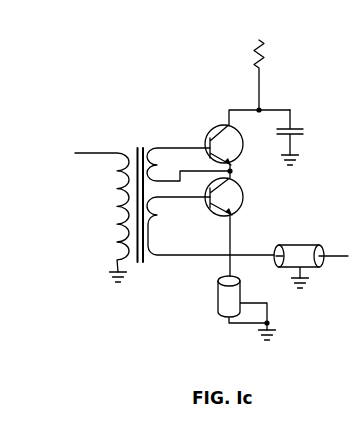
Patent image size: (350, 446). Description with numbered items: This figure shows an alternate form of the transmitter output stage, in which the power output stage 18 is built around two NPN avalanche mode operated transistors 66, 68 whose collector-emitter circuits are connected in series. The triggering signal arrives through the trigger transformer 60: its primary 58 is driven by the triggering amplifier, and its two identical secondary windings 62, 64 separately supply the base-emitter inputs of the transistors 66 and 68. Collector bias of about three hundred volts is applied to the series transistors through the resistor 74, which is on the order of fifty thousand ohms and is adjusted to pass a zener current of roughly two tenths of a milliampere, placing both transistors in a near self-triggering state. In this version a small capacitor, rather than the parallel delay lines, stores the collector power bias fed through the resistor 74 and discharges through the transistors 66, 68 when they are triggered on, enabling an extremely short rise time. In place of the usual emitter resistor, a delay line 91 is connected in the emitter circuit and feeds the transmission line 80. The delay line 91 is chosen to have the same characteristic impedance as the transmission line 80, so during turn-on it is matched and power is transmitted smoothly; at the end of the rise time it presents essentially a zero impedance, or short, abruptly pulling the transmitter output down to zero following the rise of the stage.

The power output stage 18 is at (174, 192).
The primary 58 is at (118, 204).
The trigger transformer 60 is at (133, 152).
The secondary winding 62 is at (157, 166).
The secondary winding 64 is at (160, 217).
The avalanche transistor 66 is at (214, 126).
The avalanche transistor 68 is at (244, 198).
The resistor 74 is at (254, 58).
The transmission line 80 is at (302, 244).
The delay line 91 is at (216, 292).